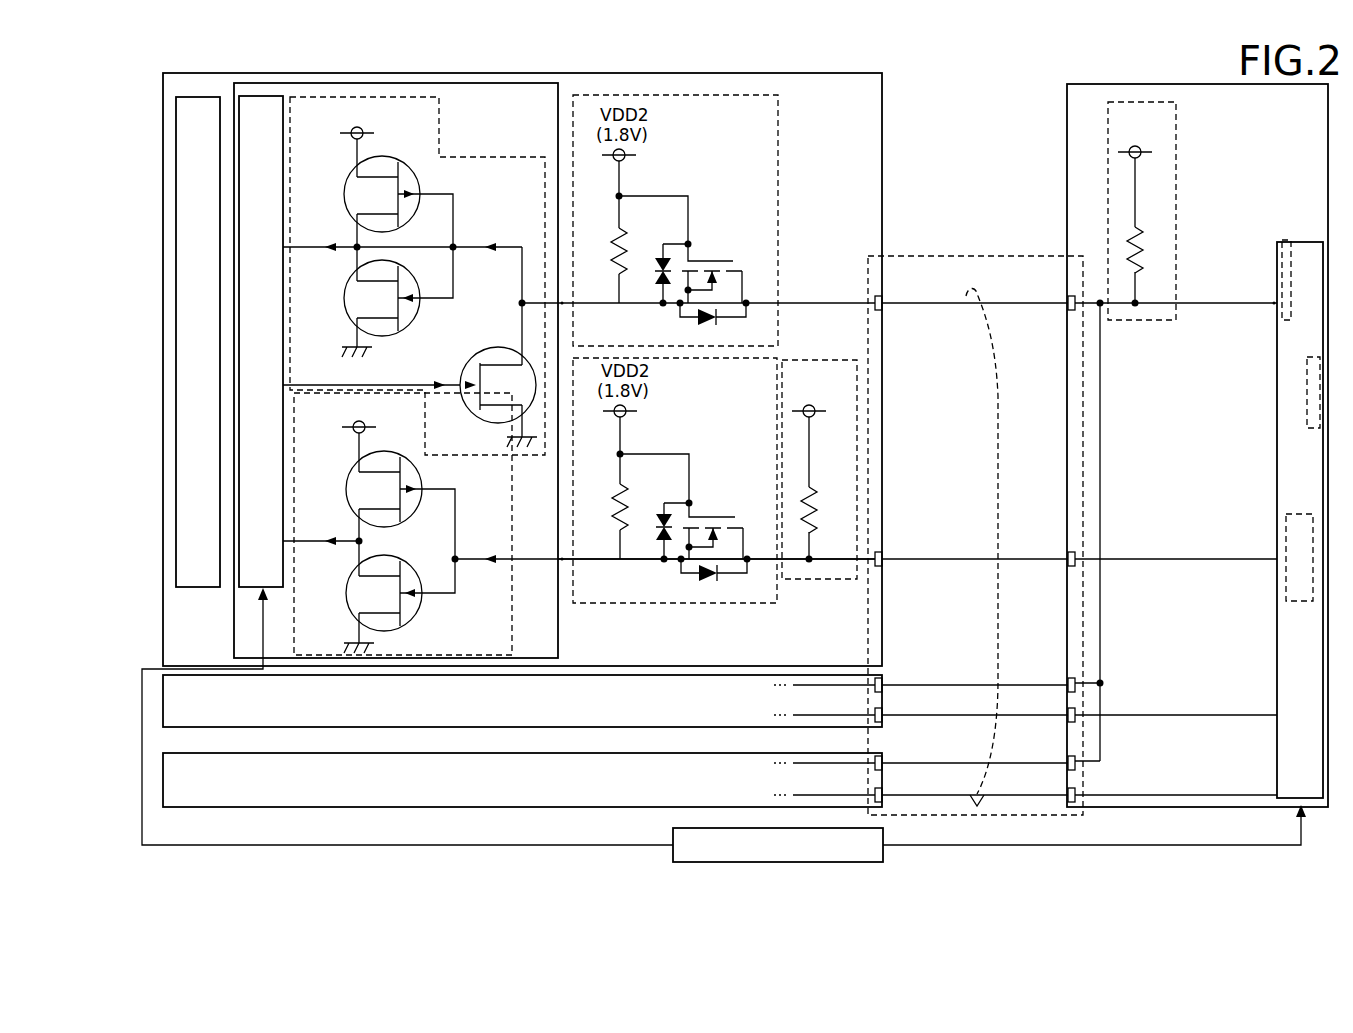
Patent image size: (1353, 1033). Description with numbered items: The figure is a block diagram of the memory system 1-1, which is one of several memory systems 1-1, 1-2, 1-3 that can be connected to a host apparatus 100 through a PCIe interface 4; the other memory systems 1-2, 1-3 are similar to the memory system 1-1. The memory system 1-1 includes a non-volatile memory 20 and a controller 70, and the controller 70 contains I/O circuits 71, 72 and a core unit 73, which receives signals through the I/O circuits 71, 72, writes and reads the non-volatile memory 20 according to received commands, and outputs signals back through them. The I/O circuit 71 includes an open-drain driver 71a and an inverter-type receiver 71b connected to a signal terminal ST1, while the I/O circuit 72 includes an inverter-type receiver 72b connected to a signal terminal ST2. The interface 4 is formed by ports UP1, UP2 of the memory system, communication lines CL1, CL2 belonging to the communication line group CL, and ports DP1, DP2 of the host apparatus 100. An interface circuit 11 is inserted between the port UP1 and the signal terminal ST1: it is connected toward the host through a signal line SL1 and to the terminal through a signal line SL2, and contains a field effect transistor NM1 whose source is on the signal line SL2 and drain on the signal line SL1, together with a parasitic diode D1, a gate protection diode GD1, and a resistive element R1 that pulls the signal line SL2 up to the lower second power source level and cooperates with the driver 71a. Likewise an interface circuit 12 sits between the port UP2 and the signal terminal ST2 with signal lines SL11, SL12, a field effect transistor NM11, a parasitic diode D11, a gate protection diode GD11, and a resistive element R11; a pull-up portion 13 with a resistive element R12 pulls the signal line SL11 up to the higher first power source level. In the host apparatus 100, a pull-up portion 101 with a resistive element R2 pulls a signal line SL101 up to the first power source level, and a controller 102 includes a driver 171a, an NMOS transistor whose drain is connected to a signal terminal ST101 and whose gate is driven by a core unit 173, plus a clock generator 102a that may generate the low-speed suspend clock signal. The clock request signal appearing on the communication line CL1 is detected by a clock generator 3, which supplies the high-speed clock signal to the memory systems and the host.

The memory system 1-1 is at (882, 76).
The memory system 1-2 is at (254, 753).
The memory system 1-3 is at (178, 753).
The clock generator 3 is at (673, 854).
The PCIe interface 4 is at (893, 256).
The interface circuit 11 is at (778, 150).
The interface circuit 12 is at (765, 603).
The pull-up portion 13 is at (805, 579).
The non-volatile memory 20 is at (189, 97).
The controller 70 is at (372, 83).
The I/O circuit 71 is at (304, 97).
The driver 71a is at (477, 332).
The receiver 71b is at (462, 166).
The I/O circuit 72 is at (512, 641).
The receiver 72b is at (438, 615).
The core unit 73 is at (254, 96).
The host apparatus 100 is at (1067, 98).
The pull-up portion 101 is at (1176, 150).
The controller 102 is at (1290, 242).
The clock generator 102a is at (1286, 520).
The driver 171a is at (1285, 240).
The core unit 173 is at (1307, 420).
The resistive element R1 is at (606, 251).
The resistive element R11 is at (605, 507).
The resistive element R12 is at (822, 462).
The resistive element R2 is at (1142, 206).
The gate protection diode GD1 is at (657, 246).
The gate protection diode GD11 is at (658, 504).
The field effect transistor NM1 is at (722, 234).
The field effect transistor NM11 is at (723, 492).
The parasitic diode D1 is at (711, 347).
The parasitic diode D11 is at (713, 598).
The signal line SL1 is at (808, 287).
The signal line SL2 is at (576, 314).
The signal line SL11 is at (877, 582).
The signal line SL12 is at (576, 570).
The signal line SL101 is at (1185, 318).
The signal terminal ST1 is at (567, 291).
The signal terminal ST2 is at (567, 548).
The signal terminal ST101 is at (1261, 322).
The port UP1 is at (884, 312).
The port UP2 is at (884, 550).
The port DP1 is at (1066, 312).
The port DP2 is at (1066, 568).
The communication line CL1 is at (1004, 286).
The communication line CL2 is at (962, 578).
The communication line group CL is at (999, 404).